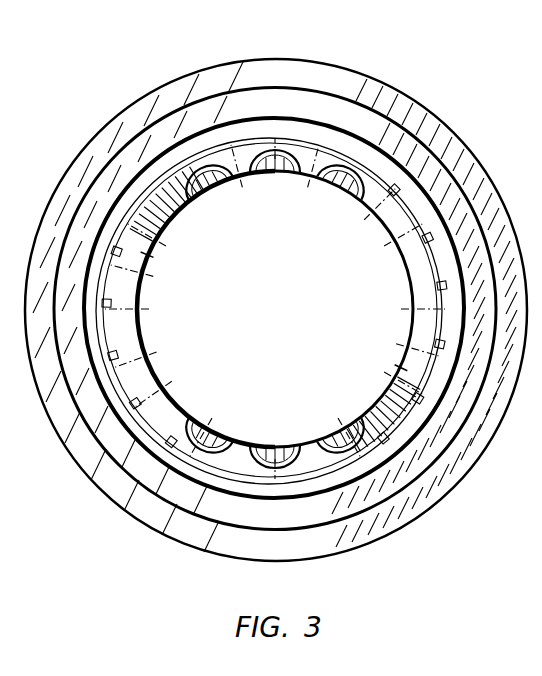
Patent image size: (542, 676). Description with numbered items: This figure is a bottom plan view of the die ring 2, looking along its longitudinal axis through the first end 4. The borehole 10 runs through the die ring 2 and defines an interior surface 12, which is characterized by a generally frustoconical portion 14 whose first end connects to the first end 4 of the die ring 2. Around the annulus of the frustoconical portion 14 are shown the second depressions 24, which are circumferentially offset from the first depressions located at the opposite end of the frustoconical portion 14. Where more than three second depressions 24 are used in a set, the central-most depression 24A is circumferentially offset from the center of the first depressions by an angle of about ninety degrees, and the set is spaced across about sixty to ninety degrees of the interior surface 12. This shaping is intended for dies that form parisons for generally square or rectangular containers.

The die ring 2 is at (463, 77).
The first end 4 is at (133, 423).
The borehole 10 is at (290, 321).
The interior surface 12 is at (390, 231).
The generally frustoconical portion 14 is at (138, 252).
The second depressions 24 is at (197, 177).
The central-most depression 24A is at (280, 173).